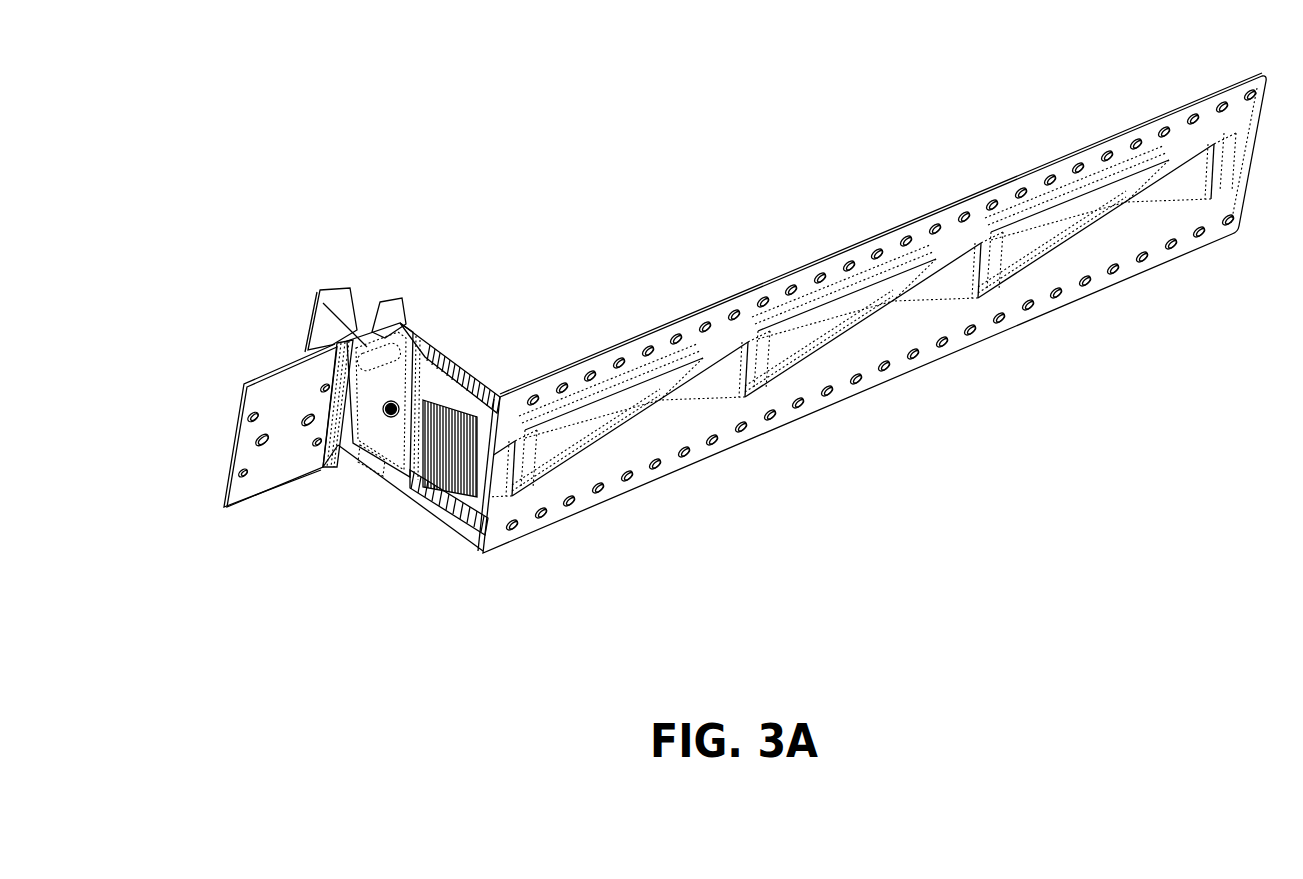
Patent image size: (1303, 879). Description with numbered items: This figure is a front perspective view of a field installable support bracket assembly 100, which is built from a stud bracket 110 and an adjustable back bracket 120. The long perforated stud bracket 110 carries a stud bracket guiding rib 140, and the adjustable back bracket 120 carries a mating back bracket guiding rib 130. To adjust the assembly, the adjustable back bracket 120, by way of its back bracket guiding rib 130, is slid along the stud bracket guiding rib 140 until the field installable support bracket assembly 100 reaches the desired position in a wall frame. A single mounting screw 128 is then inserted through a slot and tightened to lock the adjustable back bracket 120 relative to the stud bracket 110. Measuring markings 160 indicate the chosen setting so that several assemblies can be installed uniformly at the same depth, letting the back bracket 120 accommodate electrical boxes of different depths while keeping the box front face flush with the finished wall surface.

The field installable support bracket assembly 100 is at (678, 293).
The stud bracket 110 is at (950, 342).
The adjustable back bracket 120 is at (265, 382).
The mounting screw 128 is at (393, 423).
The back bracket guiding rib 130 is at (397, 365).
The stud bracket guiding rib 140 is at (470, 407).
The measuring markings 160 is at (450, 363).